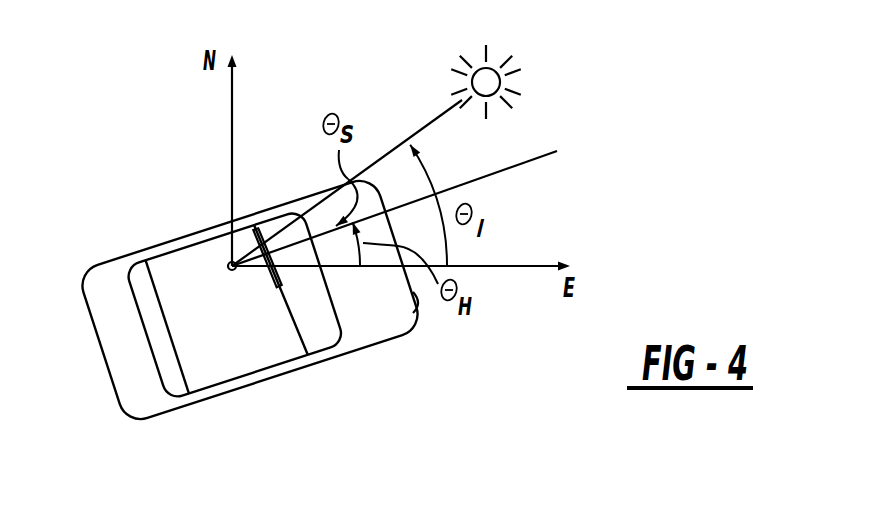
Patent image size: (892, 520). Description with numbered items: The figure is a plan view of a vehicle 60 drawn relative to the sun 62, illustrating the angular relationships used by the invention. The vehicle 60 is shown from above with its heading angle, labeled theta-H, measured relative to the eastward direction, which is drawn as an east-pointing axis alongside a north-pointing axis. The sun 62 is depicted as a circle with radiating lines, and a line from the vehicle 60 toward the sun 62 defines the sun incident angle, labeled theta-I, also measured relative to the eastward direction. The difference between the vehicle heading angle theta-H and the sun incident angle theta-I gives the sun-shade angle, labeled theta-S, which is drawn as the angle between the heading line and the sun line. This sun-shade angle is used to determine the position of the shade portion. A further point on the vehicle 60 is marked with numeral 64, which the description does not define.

The vehicle 60 is at (125, 255).
The sun 62 is at (497, 73).
The sun load sensor 64 is at (229, 272).